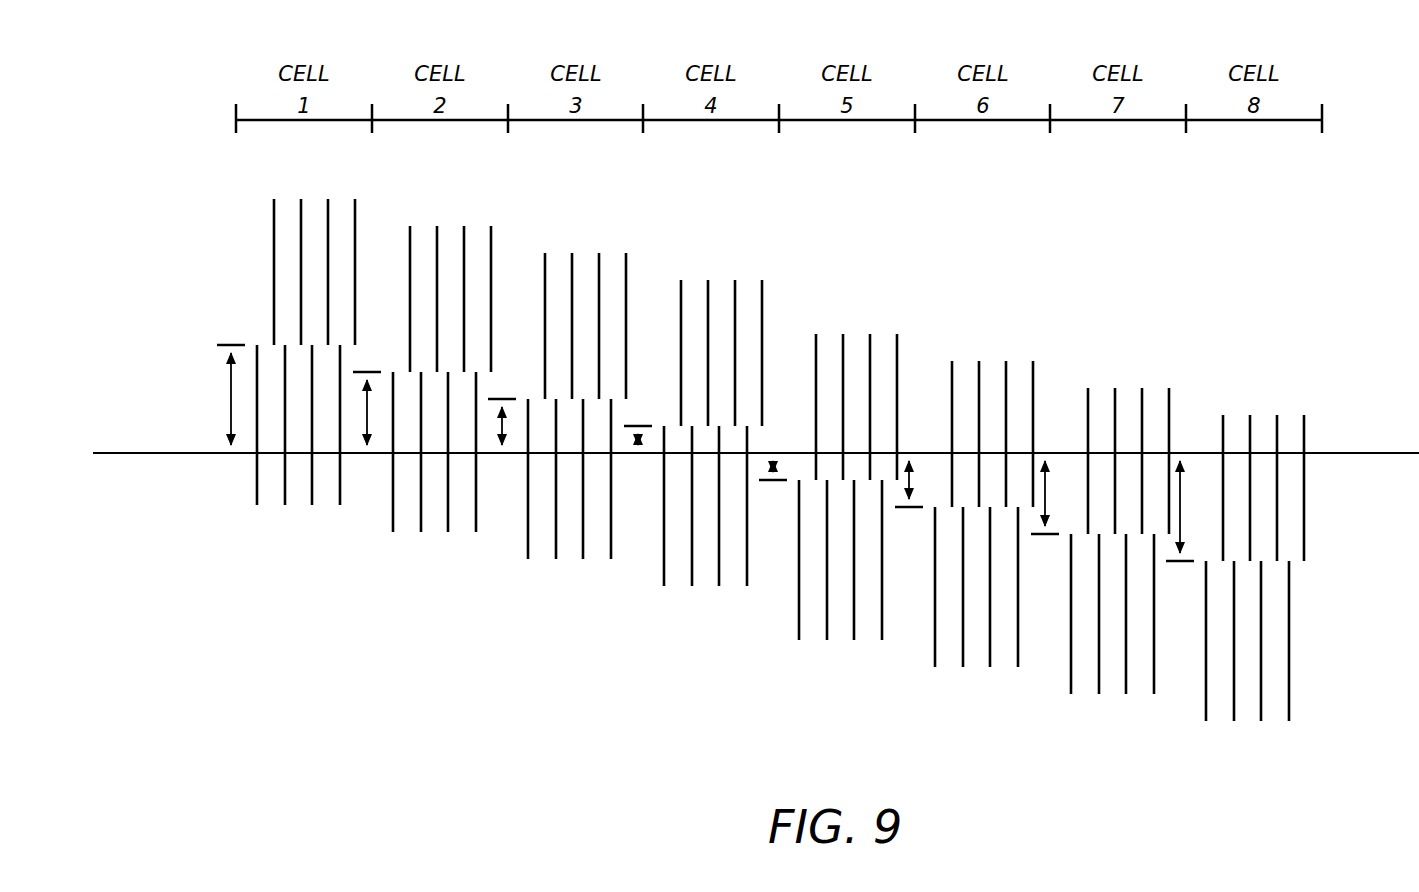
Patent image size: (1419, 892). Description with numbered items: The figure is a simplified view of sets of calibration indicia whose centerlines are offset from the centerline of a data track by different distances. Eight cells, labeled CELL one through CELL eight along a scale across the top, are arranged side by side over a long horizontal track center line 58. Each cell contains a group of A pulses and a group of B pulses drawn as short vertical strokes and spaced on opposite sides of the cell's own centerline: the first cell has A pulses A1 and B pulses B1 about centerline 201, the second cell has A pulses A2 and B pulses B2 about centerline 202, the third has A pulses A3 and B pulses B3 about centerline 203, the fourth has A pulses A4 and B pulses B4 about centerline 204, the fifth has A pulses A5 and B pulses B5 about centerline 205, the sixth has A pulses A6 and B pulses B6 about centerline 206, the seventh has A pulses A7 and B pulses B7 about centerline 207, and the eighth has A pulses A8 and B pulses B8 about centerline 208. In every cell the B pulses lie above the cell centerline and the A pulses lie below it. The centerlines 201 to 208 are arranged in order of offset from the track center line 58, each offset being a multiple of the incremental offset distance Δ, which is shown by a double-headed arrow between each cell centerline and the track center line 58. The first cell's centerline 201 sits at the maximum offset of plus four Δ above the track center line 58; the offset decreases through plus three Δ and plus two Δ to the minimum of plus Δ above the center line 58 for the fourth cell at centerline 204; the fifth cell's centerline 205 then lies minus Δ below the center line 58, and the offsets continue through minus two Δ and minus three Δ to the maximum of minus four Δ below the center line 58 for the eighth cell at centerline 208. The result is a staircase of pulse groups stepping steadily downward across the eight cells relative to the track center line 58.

The track center line 58 is at (1365, 454).
The centerline 201 is at (227, 343).
The centerline 202 is at (370, 372).
The centerline 203 is at (502, 399).
The centerline 204 is at (640, 426).
The centerline 205 is at (773, 482).
The centerline 206 is at (908, 509).
The centerline 207 is at (1045, 536).
The centerline 208 is at (1182, 563).
The A pulses A1 is at (257, 477).
The A pulses A2 is at (393, 512).
The A pulses A3 is at (528, 544).
The A pulses A4 is at (664, 560).
The A pulses A5 is at (799, 628).
The A pulses A6 is at (935, 655).
The A pulses A7 is at (1071, 682).
The A pulses A8 is at (1206, 709).
The B pulses B1 is at (274, 227).
The B pulses B2 is at (410, 254).
The B pulses B3 is at (545, 281).
The B pulses B4 is at (681, 306).
The B pulses B5 is at (816, 360).
The B pulses B6 is at (952, 388).
The B pulses B7 is at (1088, 396).
The B pulses B8 is at (1223, 422).